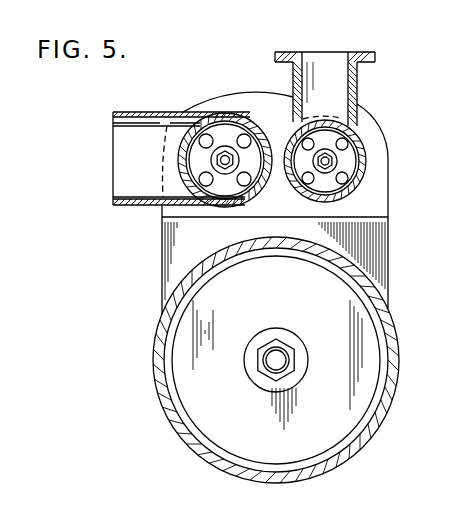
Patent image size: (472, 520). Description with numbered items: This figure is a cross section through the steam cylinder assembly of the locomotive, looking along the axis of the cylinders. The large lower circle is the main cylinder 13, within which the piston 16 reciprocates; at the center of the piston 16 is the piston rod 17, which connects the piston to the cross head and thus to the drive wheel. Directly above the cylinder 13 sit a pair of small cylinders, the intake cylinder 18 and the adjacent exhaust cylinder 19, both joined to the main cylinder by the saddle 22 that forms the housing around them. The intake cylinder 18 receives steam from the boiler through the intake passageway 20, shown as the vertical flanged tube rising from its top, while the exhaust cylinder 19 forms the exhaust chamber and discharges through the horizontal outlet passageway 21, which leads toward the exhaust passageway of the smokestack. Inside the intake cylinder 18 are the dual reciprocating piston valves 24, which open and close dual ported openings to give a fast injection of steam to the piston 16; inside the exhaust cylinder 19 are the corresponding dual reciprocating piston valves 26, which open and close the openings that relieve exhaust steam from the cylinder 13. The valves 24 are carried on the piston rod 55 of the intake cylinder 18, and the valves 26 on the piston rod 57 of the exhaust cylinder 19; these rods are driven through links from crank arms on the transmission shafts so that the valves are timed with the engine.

The cylinder 13 is at (387, 397).
The piston 16 is at (362, 332).
The piston rod 17 is at (274, 368).
The intake cylinder 18 is at (367, 160).
The exhaust cylinder 19 is at (222, 112).
The intake passageway 20 is at (328, 65).
The outlet passageway 21 is at (118, 157).
The saddle 22 is at (380, 272).
The dual reciprocating piston valve 24 is at (348, 152).
The dual reciprocating piston valve 26 is at (195, 152).
The piston rod 55 is at (327, 167).
The piston rod 57 is at (226, 168).